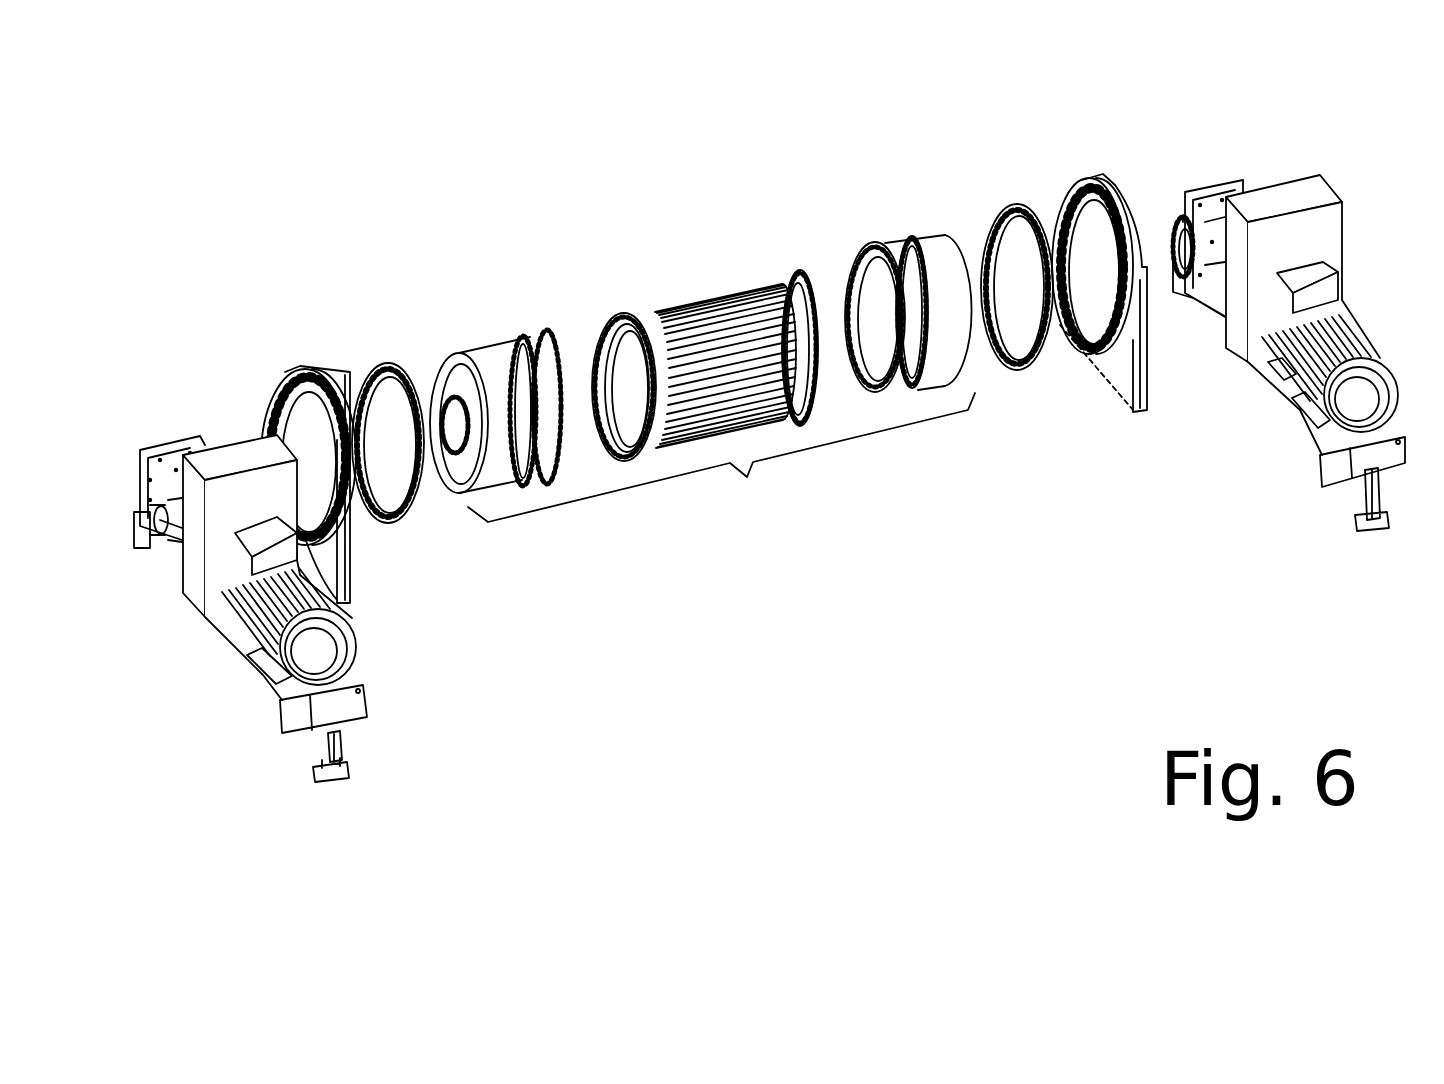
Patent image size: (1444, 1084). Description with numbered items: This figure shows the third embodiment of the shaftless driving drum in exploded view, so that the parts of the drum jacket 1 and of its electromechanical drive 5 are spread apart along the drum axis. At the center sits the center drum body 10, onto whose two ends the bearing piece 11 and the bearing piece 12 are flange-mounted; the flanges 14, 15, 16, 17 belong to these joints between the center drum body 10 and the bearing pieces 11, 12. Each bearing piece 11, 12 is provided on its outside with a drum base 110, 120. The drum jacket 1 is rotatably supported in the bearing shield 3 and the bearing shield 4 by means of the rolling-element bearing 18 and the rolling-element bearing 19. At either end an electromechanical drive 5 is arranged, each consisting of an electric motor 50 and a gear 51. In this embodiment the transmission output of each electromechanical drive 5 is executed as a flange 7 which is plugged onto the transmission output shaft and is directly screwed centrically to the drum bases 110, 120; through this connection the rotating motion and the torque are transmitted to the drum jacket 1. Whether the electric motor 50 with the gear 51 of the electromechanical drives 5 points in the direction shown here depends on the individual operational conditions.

The drum jacket 1 is at (721, 470).
The bearing shield 3 is at (347, 557).
The bearing shield 4 is at (1140, 367).
The electromechanical drive 5 is at (184, 644).
The flange 7 is at (1177, 227).
The center drum body 10 is at (773, 302).
The bearing piece 11 is at (505, 403).
The bearing piece 12 is at (928, 257).
The flange 14 is at (612, 312).
The flange 15 is at (780, 278).
The flange 16 is at (517, 335).
The flange 17 is at (867, 250).
The rolling-element bearing 18 is at (387, 365).
The rolling-element bearing 19 is at (1043, 360).
The electric motor 50 is at (320, 658).
The gear 51 is at (175, 453).
The drum base 110 is at (450, 382).
The drum base 120 is at (972, 250).